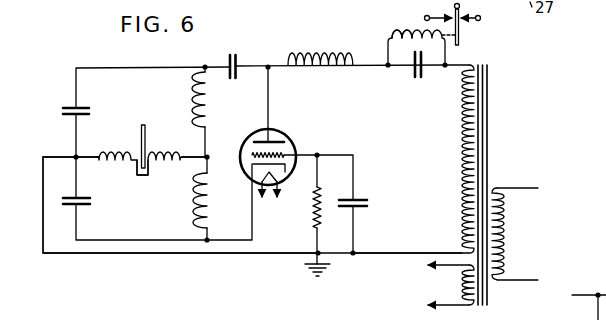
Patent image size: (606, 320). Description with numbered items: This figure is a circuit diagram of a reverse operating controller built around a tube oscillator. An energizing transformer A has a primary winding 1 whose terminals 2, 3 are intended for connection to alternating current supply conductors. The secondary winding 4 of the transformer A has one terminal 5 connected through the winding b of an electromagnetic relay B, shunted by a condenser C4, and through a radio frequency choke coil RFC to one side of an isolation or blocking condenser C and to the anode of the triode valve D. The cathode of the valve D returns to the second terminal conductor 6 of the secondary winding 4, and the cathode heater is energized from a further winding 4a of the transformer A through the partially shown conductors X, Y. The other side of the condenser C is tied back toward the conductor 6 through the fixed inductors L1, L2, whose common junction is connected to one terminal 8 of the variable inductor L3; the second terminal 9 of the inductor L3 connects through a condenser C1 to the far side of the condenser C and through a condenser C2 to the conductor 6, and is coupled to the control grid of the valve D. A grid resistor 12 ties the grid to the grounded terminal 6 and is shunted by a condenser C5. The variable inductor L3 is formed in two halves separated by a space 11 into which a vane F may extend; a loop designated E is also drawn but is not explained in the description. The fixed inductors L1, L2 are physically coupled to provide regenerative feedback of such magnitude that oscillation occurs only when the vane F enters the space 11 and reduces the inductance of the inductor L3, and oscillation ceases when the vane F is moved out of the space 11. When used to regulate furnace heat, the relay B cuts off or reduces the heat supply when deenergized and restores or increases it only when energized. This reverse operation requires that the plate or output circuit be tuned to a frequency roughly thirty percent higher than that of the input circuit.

The primary winding 1 is at (503, 231).
The primary winding terminal 2 is at (527, 279).
The primary winding terminal 3 is at (521, 187).
The secondary winding 4 is at (460, 150).
The heater winding 4a is at (461, 286).
The secondary winding terminal 5 is at (456, 66).
The second terminal conductor 6 is at (436, 252).
The inductor terminal 8 is at (195, 156).
The second inductor terminal 9 is at (85, 157).
The space between inductor halves 11 is at (147, 172).
The grid resistor 12 is at (312, 204).
The energizing transformer A is at (504, 85).
The electromagnetic relay B is at (386, 21).
The relay winding b is at (413, 38).
The isolation or blocking condenser C is at (232, 51).
The condenser C1 is at (91, 111).
The condenser C2 is at (91, 203).
The relay shunt condenser C4 is at (418, 78).
The grid shunt condenser C5 is at (366, 203).
The triode valve D is at (292, 124).
The tuned circuit loop E is at (150, 264).
The vane F is at (145, 135).
The fixed inductor L1 is at (200, 102).
The fixed inductor L2 is at (200, 202).
The variable inductor L3 is at (129, 164).
The radio frequency choke coil RFC is at (346, 52).
The heater conductor X is at (264, 200).
The heater conductor Y is at (276, 200).